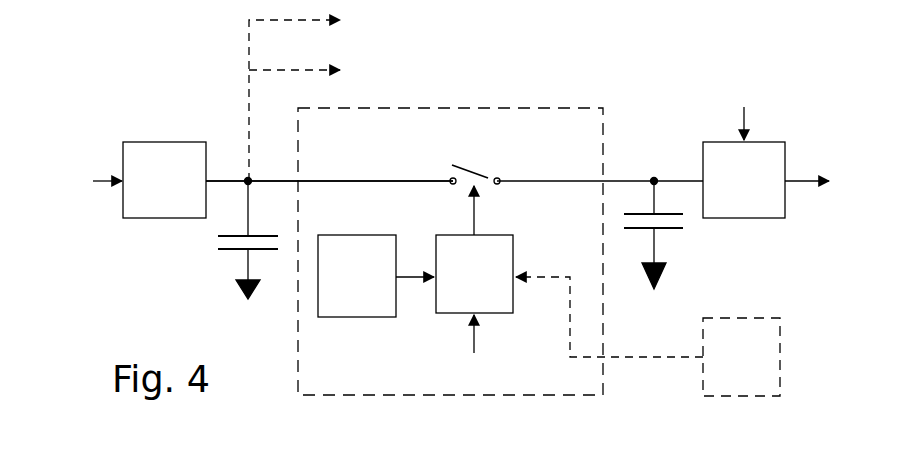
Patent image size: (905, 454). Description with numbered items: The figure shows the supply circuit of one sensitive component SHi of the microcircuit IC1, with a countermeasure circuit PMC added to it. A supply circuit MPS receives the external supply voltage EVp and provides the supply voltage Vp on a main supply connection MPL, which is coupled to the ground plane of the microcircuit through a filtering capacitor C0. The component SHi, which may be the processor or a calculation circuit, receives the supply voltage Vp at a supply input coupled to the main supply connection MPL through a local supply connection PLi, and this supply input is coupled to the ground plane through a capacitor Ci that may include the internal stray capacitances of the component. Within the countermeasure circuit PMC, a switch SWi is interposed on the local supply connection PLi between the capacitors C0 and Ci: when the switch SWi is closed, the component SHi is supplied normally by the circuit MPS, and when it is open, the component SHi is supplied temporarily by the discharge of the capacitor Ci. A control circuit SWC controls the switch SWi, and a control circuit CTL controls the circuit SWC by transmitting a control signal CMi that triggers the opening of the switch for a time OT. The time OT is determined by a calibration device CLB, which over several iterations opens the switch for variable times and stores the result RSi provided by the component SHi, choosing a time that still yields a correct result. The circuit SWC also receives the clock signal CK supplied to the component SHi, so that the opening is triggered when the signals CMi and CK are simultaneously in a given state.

The microcircuit IC1 is at (112, 82).
The external supply voltage EVp is at (79, 181).
The supply circuit MPS is at (164, 180).
The main supply connection MPL is at (229, 178).
The supply voltage Vp is at (318, 93).
The filtering capacitor C0 is at (217, 250).
The countermeasure circuit PMC is at (450, 251).
The local supply connection PLi is at (411, 178).
The switch SWi is at (490, 175).
The control signal CMi is at (479, 215).
The control circuit CTL is at (376, 276).
The control circuit SWC is at (474, 274).
The clock signal CK is at (609, 230).
The control signal OT is at (609, 317).
The calibration device CLB is at (741, 357).
The component SHi is at (744, 180).
The result RSi is at (831, 181).
The capacitor Ci is at (681, 230).